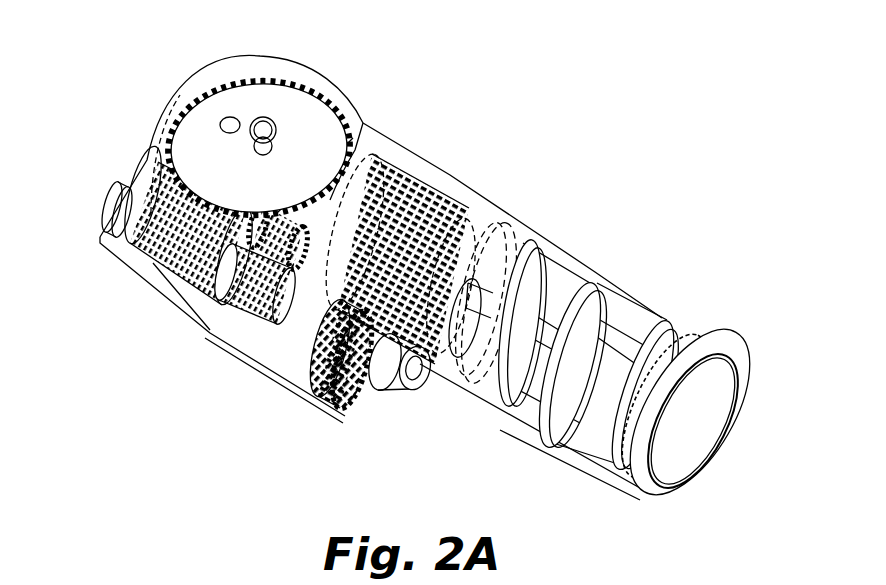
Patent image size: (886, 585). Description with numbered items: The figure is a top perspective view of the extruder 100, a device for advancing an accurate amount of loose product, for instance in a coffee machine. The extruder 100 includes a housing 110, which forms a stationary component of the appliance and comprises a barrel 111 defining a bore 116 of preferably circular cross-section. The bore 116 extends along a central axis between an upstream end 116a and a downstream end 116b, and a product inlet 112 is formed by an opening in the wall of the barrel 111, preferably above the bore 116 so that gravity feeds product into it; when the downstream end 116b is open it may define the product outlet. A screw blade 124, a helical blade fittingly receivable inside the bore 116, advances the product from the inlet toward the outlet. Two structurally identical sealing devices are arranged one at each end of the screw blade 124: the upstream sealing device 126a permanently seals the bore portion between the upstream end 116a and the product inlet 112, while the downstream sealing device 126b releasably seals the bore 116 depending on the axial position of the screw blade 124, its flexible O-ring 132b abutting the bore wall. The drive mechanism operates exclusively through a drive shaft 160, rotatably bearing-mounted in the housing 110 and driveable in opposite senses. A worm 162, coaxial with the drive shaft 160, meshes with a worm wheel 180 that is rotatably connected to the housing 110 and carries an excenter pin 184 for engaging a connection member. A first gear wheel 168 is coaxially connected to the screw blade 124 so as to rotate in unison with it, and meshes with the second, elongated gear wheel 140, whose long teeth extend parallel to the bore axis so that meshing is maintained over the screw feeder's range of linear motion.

The extruder 100 is at (97, 68).
The housing 110 is at (297, 368).
The barrel 111 is at (547, 267).
The product inlet 112 is at (632, 277).
The bore 116 is at (613, 338).
The upstream end 116a is at (370, 138).
The downstream end 116b is at (640, 462).
The screw blade 124 is at (565, 382).
The second, upstream sealing device 126a is at (497, 247).
The first, downstream sealing device 126b is at (703, 425).
The flexible O-ring 132b is at (690, 362).
The second, elongated gear wheel 140 is at (410, 208).
The drive shaft 160 is at (125, 202).
The worm 162 is at (157, 263).
The first gear wheel 168 is at (240, 302).
The worm wheel 180 is at (302, 125).
The excenter pin 184 is at (220, 112).